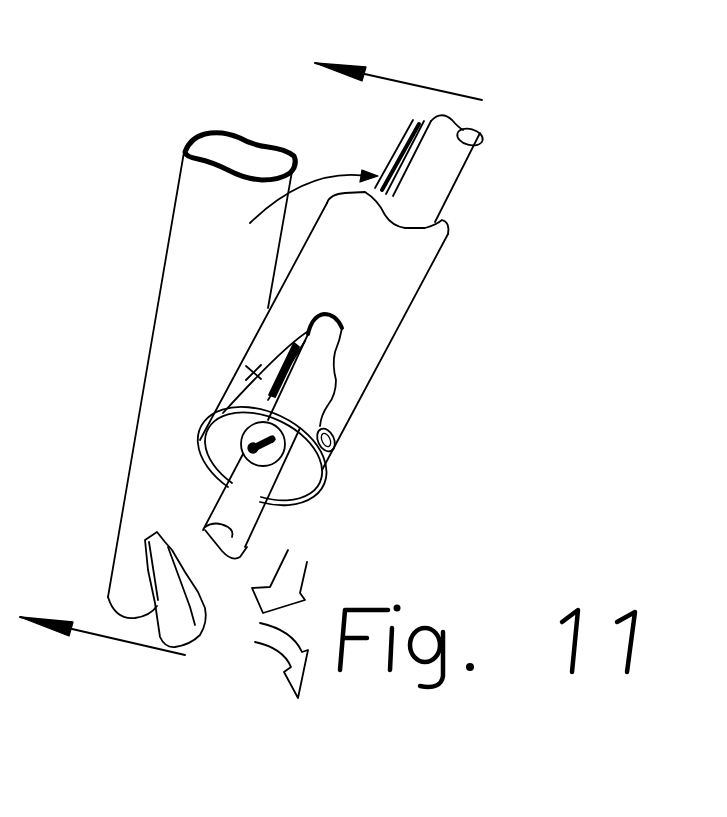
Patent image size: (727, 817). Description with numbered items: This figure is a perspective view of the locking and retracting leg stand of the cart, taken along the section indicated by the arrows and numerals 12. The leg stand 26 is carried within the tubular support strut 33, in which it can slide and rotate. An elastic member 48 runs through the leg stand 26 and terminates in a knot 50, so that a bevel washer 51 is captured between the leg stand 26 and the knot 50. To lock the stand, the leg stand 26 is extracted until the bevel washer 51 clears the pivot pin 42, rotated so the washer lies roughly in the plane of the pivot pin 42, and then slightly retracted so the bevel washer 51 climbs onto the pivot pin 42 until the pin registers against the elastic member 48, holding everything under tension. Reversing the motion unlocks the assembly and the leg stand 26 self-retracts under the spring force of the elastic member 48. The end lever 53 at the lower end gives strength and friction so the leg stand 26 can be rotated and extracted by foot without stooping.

The section line 12- 12 is at (82, 730).
The leg stand 26 is at (252, 517).
The support strut 33 is at (398, 283).
The pivot pin 42 is at (345, 420).
The elastic member 48 is at (255, 373).
The knot 50 is at (230, 447).
The bevel washer 51 is at (271, 459).
The end lever 53 is at (160, 578).